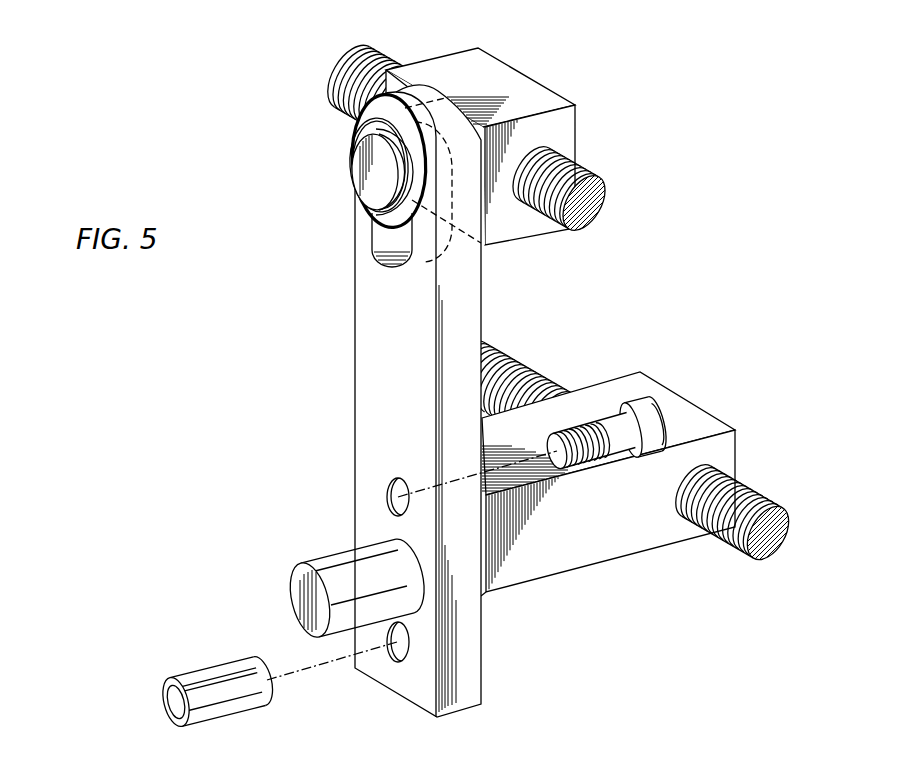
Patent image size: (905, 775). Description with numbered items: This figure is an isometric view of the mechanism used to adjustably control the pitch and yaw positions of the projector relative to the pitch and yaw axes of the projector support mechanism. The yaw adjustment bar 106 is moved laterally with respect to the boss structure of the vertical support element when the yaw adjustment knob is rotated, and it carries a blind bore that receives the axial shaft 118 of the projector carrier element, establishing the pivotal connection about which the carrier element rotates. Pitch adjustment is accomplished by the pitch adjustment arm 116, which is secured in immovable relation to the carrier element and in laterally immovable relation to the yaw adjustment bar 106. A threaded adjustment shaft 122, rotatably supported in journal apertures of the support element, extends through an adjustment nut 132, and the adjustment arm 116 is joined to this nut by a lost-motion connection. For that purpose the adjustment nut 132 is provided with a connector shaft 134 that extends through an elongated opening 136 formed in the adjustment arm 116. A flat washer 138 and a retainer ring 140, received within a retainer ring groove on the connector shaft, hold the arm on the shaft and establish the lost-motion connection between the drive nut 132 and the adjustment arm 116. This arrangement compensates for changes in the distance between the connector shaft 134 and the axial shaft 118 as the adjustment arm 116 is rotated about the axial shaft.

The yaw adjustment bar 106 is at (695, 415).
The pitch adjustment arm 116 is at (367, 381).
The axial shaft 118 is at (328, 566).
The threaded adjustment shaft 122 is at (590, 178).
The adjustment nut 132 is at (518, 82).
The connector shaft 134 is at (362, 176).
The elongated opening 136 is at (392, 262).
The flat washer 138 is at (362, 120).
The retainer ring 140 is at (392, 226).